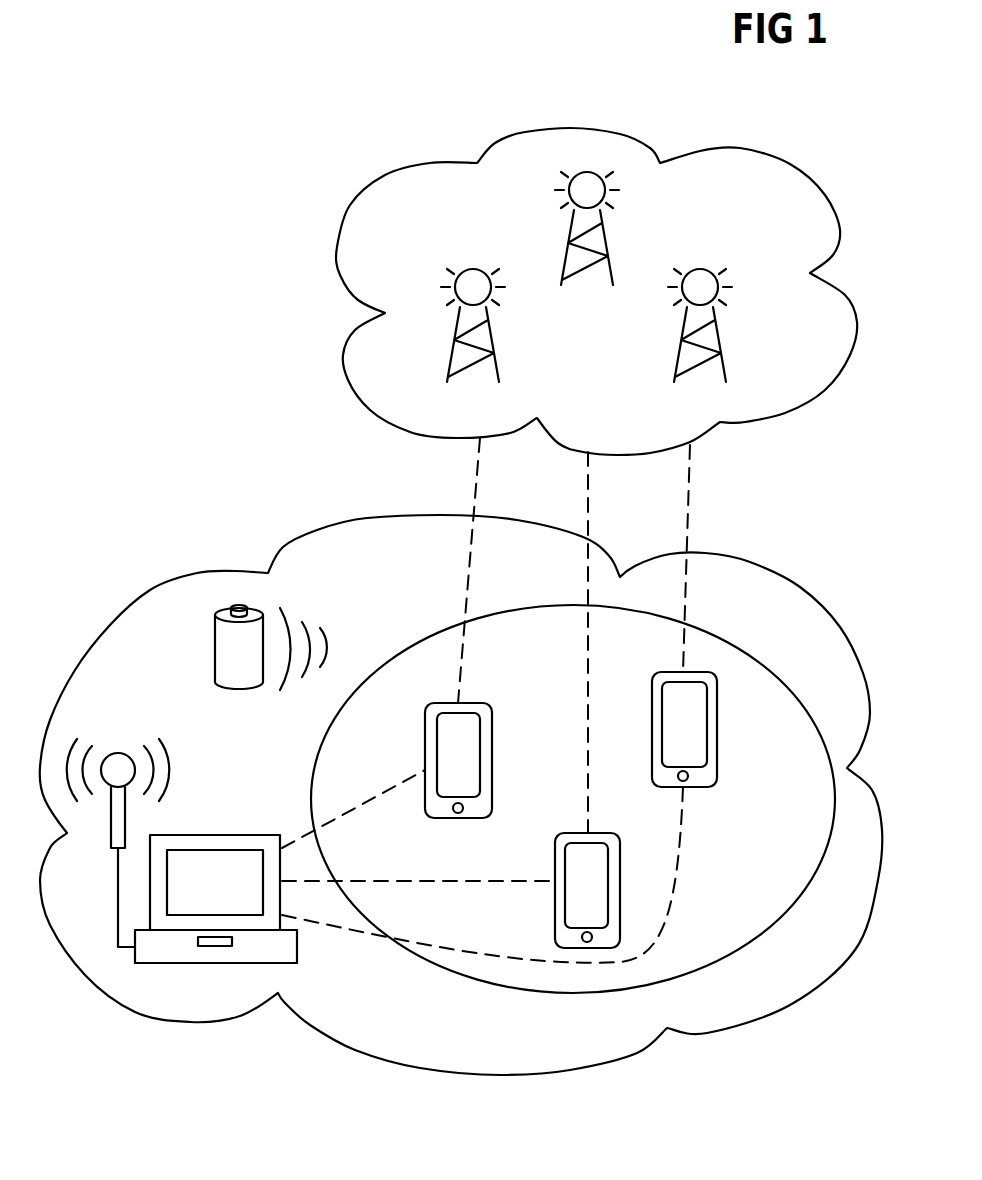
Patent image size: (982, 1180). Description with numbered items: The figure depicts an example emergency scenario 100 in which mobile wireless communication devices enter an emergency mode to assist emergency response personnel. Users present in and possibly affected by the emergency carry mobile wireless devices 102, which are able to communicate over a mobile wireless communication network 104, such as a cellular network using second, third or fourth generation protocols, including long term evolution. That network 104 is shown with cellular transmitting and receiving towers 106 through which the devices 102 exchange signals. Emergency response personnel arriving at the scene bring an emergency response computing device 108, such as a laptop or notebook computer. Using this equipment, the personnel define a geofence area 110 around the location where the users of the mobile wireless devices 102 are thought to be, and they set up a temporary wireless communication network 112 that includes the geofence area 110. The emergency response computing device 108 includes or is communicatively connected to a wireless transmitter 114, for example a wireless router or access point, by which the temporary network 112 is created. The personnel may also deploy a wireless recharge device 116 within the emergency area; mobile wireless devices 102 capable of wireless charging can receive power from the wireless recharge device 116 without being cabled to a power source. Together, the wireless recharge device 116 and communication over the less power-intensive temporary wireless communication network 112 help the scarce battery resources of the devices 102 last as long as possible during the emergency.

The communication system 100 is at (140, 326).
The mobile wireless communication device 102 is at (492, 787).
The mobile wireless communication network 104 is at (338, 242).
The cellular transmitting and receiving tower 106 is at (608, 238).
The emergency response computing device 108 is at (297, 953).
The geofence area 110 is at (553, 993).
The temporary wireless communication network 112 is at (570, 1073).
The wireless transmitter 114 is at (125, 820).
The wireless recharge device 116 is at (215, 643).